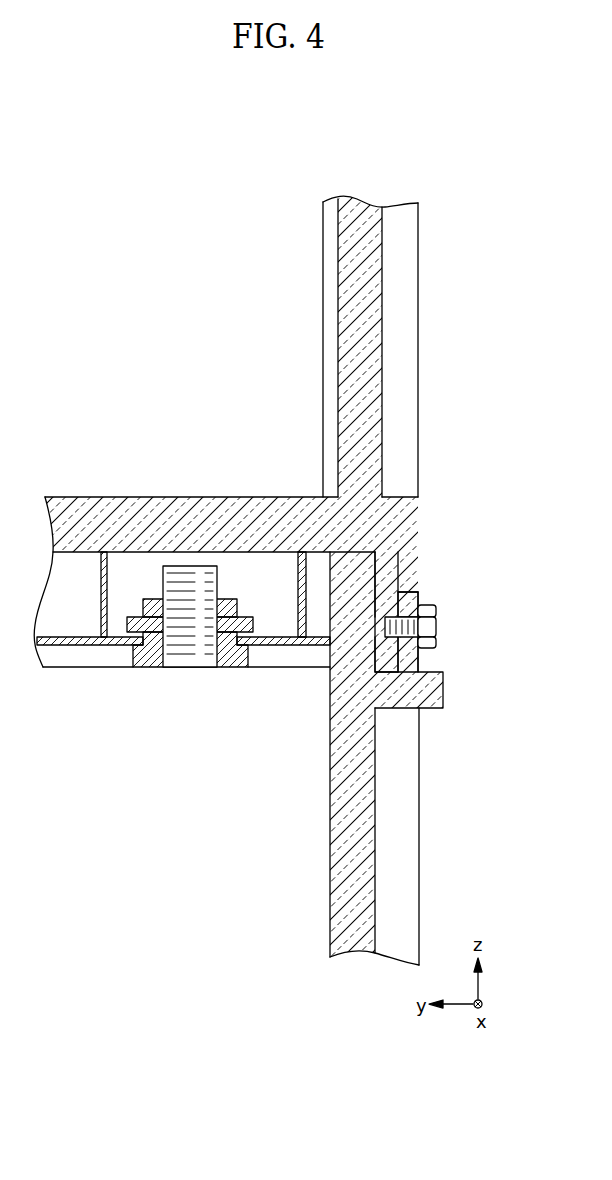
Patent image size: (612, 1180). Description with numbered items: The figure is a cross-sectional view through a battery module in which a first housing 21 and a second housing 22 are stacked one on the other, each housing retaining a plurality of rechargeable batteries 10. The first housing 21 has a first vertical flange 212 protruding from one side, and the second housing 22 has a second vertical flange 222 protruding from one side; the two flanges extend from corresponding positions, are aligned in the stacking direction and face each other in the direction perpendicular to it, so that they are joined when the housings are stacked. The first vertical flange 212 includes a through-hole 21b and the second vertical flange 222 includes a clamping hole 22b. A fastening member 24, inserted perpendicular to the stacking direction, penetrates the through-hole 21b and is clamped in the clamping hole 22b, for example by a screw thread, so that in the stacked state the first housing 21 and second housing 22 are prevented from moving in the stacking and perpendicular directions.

The rechargeable battery 10 is at (187, 341).
The second housing 22 is at (382, 353).
The clamping hole 22b is at (386, 612).
The first housing 21 is at (425, 863).
The through-hole 21b is at (421, 608).
The first vertical flange 212 is at (409, 657).
The second vertical flange 222 is at (385, 656).
The fastening member 24 is at (430, 624).